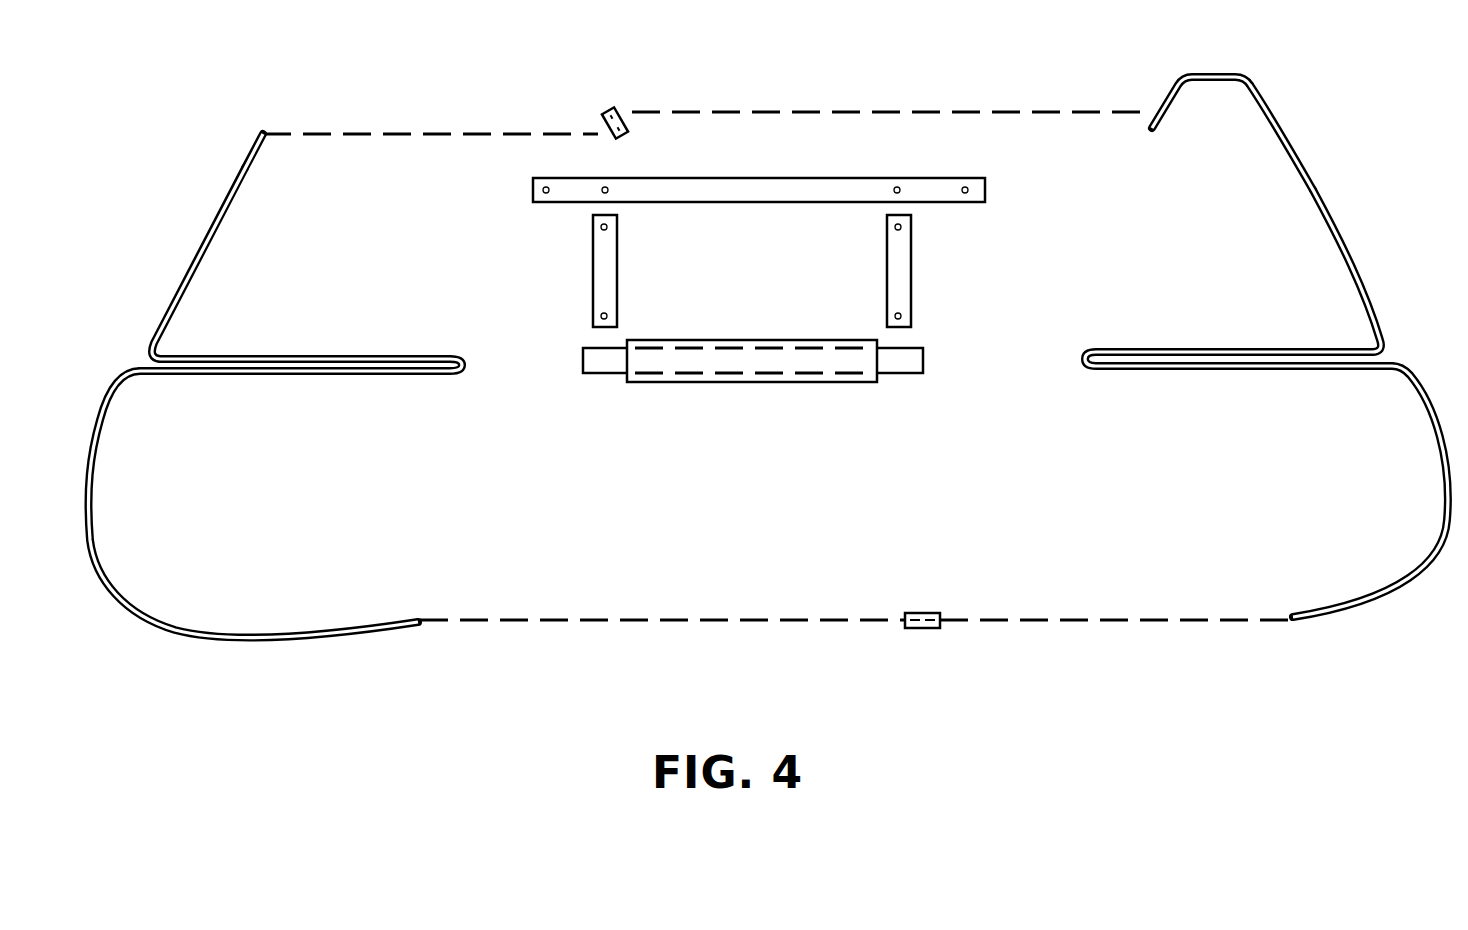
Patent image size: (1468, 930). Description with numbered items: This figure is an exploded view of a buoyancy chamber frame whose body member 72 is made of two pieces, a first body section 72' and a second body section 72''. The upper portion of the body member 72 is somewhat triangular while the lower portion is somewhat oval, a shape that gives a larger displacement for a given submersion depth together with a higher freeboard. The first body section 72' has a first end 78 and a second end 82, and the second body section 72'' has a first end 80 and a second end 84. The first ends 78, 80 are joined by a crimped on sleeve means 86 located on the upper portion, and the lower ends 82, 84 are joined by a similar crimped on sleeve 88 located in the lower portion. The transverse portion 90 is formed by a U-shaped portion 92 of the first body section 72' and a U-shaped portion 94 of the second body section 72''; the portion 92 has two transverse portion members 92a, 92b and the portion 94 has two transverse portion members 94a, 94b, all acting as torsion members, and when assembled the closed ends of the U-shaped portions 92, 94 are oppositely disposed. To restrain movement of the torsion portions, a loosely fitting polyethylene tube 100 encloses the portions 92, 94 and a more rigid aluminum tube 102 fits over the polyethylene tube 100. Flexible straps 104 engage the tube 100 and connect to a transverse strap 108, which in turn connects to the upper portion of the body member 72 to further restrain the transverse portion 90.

The body member 72 is at (1297, 127).
The first body section 72' is at (1360, 271).
The second body section 72'' is at (187, 263).
The first end of first body section 78 is at (1153, 122).
The first end of second body section 80 is at (264, 142).
The second end of first body section 82 is at (1297, 616).
The second end of second body section 84 is at (404, 622).
The crimped on sleeve means 86 is at (606, 113).
The crimped on sleeve 88 is at (918, 613).
The transverse portion 90 is at (1160, 372).
The transverse portion of first body section 92 is at (1170, 333).
The transverse portion member 92a is at (1240, 350).
The transverse portion member 92b is at (1302, 370).
The transverse portion of second body section 94 is at (355, 357).
The transverse portion member 94a is at (226, 333).
The transverse portion member 94b is at (236, 373).
The polyethylene tube 100 is at (909, 380).
The aluminum tube 102 is at (740, 384).
The flexible straps 104 is at (617, 260).
The transverse strap 108 is at (700, 178).